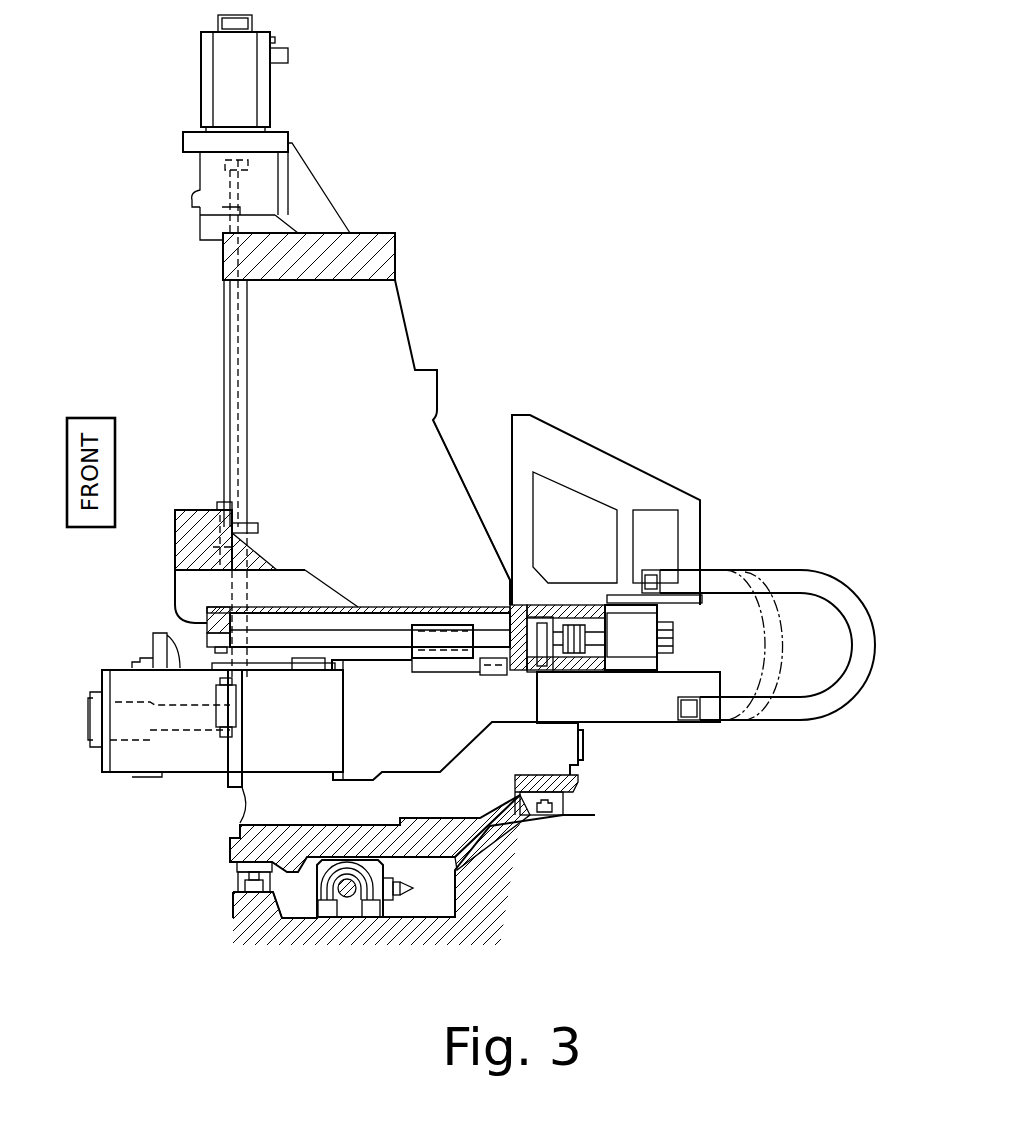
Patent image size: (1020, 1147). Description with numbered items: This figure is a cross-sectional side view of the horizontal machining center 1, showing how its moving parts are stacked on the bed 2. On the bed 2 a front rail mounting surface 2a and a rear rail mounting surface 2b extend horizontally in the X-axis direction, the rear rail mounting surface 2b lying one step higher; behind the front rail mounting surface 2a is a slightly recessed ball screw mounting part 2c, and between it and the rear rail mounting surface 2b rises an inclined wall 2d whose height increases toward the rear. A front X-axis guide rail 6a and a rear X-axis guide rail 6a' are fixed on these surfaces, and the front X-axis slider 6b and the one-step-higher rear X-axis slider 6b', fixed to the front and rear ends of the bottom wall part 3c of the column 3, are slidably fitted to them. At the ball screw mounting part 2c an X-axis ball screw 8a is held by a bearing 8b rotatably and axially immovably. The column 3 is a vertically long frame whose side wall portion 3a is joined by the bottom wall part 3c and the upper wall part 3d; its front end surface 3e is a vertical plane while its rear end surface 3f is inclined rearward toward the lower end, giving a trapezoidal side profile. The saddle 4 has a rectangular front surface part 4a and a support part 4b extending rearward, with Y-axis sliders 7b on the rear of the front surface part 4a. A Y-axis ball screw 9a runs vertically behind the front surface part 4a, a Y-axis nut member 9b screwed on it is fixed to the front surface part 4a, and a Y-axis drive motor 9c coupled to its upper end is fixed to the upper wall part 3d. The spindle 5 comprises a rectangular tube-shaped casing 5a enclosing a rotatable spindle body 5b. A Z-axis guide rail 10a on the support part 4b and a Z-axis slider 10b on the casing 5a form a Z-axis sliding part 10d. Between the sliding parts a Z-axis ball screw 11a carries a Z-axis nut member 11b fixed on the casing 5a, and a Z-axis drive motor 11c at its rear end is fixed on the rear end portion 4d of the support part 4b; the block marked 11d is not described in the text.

The horizontal machining center 1 is at (447, 218).
The bed 2 is at (492, 910).
The front rail mounting surface 2a is at (235, 893).
The rear rail mounting surface 2b is at (563, 808).
The ball screw mounting part 2c is at (405, 908).
The inclined wall 2d is at (490, 847).
The column 3 is at (422, 335).
The left side wall portion 3a is at (428, 453).
The bottom wall part 3c is at (430, 857).
The upper wall part 3d is at (330, 233).
The front end surface 3e is at (232, 340).
The rear end surface 3f is at (461, 478).
The saddle 4 is at (166, 512).
The front surface part 4a is at (193, 510).
The support part 4b is at (390, 606).
The rear end portion 4d is at (597, 605).
The spindle 5 is at (103, 667).
The casing 5a is at (155, 640).
The spindle body 5b is at (153, 737).
The front X-axis guide rail 6a is at (226, 921).
The rear X-axis guide rail 6a' is at (575, 838).
The front X-axis slider 6b is at (213, 874).
The rear X-axis slider 6b' is at (591, 794).
The Y-axis slider 7b is at (172, 532).
The X-axis ball screw 8a is at (345, 895).
The bearing 8b is at (363, 905).
The Y-axis ball screw 9a is at (224, 400).
The Y-axis nut member 9b is at (257, 542).
The Y-axis drive motor 9c is at (271, 100).
The left Z-axis guide rail 10a is at (273, 665).
The left Z-axis slider 10b is at (310, 662).
The Z-axis sliding part 10d is at (386, 535).
The Z-axis ball screw 11a is at (332, 620).
The Z-axis nut member 11b is at (442, 625).
The Z-axis drive motor 11c is at (673, 636).
The end block 11d is at (210, 623).